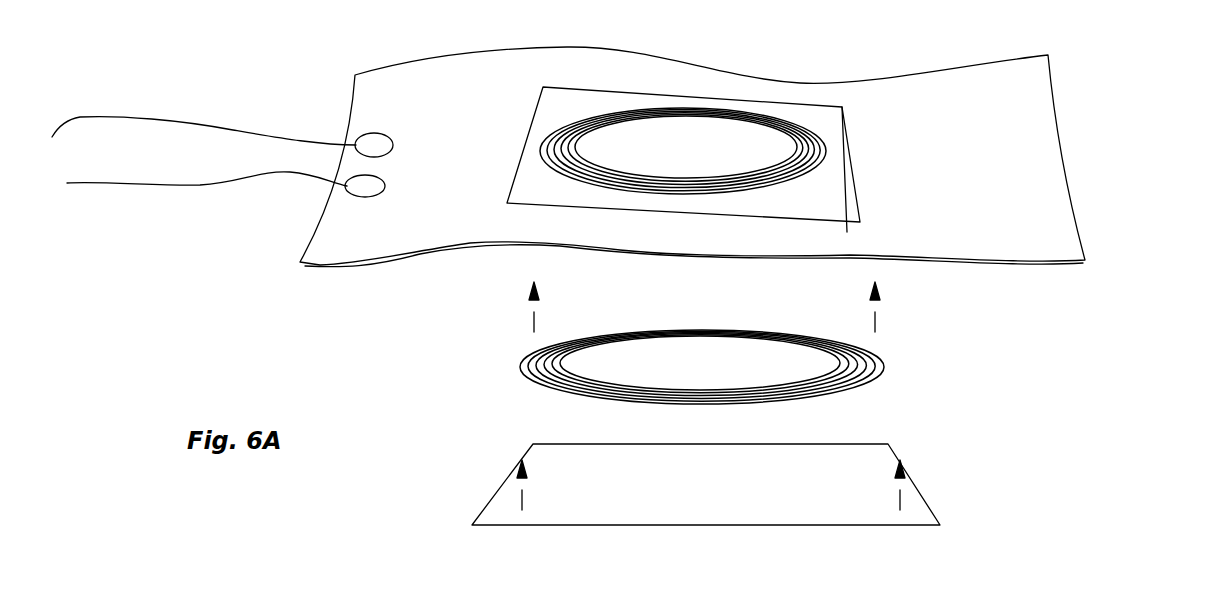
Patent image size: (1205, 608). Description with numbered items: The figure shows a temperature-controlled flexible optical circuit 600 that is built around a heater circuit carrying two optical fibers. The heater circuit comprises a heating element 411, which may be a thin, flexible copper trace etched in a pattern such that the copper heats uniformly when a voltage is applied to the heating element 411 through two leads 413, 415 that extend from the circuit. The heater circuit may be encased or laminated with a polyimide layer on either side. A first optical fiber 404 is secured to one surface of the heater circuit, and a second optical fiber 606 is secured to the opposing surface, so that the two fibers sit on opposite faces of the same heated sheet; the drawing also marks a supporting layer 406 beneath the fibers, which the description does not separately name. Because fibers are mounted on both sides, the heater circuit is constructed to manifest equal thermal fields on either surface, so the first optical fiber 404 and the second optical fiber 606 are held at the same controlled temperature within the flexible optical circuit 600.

The first optical fiber 404 is at (748, 115).
The substrate 406 is at (538, 172).
The heating element 411 is at (885, 197).
The lead 413 is at (150, 118).
The lead 415 is at (177, 188).
The second optical fiber 606 is at (520, 370).
The temperature-controlled flexible optical circuit 600 is at (1005, 412).